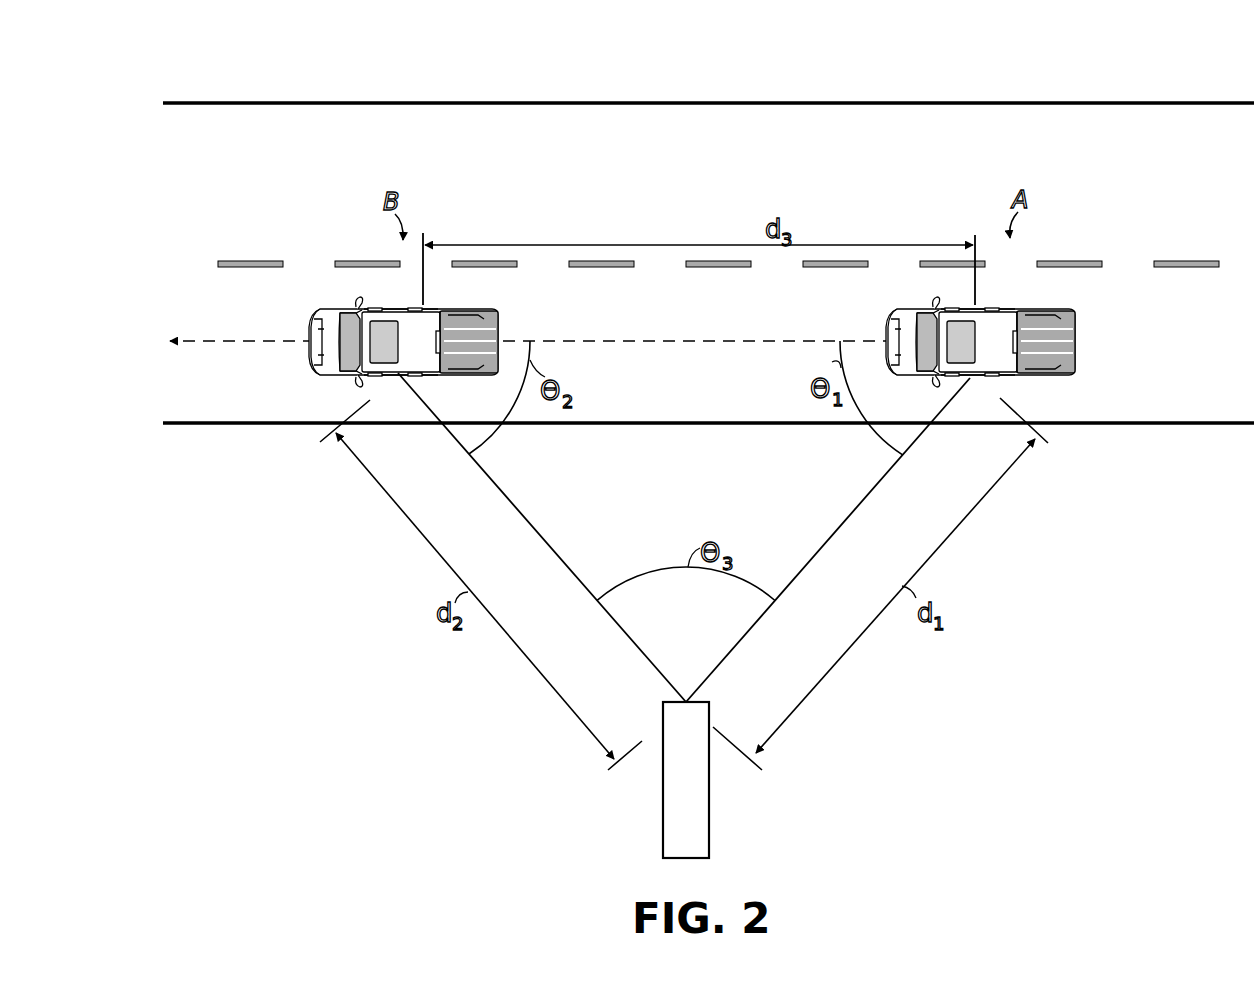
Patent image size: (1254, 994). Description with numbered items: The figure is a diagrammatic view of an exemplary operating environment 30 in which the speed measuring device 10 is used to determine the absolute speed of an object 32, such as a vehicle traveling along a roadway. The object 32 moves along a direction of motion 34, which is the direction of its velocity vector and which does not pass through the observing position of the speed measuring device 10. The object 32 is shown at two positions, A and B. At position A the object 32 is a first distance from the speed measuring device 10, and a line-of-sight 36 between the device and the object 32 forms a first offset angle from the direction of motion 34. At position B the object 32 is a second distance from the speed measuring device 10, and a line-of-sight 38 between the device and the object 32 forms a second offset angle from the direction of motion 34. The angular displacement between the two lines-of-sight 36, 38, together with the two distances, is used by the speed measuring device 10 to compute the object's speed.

The speed measuring device 10 is at (663, 826).
The operating environment 30 is at (1082, 60).
The object 32 is at (498, 335).
The direction of motion 34 is at (232, 341).
The line-of-sight 36 is at (843, 520).
The line-of-sight 38 is at (548, 532).